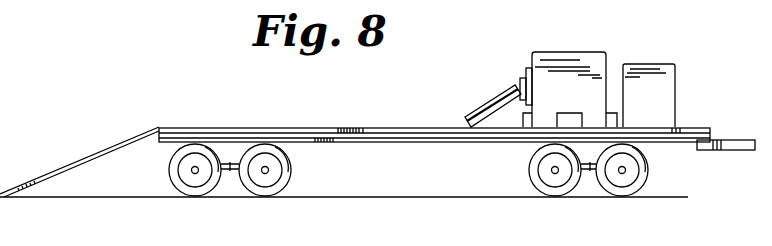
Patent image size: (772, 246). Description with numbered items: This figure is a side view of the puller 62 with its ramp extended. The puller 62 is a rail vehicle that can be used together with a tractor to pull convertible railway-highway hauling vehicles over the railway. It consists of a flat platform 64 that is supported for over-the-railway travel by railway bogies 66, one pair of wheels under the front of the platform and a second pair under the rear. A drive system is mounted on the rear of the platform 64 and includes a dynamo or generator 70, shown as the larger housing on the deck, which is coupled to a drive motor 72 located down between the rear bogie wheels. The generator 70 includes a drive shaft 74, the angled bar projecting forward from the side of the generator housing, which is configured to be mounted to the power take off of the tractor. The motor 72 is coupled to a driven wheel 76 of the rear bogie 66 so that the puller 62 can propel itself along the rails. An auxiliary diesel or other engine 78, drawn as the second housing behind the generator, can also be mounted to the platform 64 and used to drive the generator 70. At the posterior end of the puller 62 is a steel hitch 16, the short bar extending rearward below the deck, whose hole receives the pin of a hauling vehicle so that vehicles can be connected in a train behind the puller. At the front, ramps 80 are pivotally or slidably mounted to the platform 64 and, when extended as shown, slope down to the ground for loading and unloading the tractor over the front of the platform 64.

The steel hitch 16 is at (735, 140).
The puller 62 is at (327, 128).
The platform 64 is at (358, 128).
The railway bogies 66 is at (445, 191).
The generator 70 is at (567, 38).
The drive motor 72 is at (588, 173).
The drive shaft 74 is at (488, 100).
The driven wheel 76 is at (650, 165).
The auxiliary engine 78 is at (675, 83).
The ramps 80 is at (82, 158).